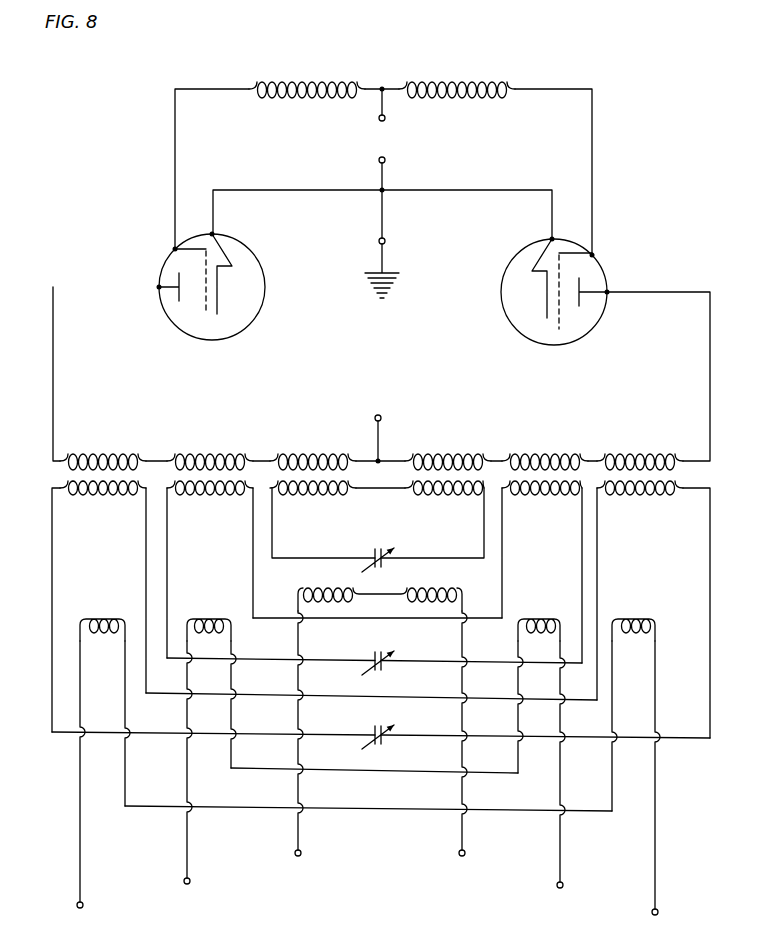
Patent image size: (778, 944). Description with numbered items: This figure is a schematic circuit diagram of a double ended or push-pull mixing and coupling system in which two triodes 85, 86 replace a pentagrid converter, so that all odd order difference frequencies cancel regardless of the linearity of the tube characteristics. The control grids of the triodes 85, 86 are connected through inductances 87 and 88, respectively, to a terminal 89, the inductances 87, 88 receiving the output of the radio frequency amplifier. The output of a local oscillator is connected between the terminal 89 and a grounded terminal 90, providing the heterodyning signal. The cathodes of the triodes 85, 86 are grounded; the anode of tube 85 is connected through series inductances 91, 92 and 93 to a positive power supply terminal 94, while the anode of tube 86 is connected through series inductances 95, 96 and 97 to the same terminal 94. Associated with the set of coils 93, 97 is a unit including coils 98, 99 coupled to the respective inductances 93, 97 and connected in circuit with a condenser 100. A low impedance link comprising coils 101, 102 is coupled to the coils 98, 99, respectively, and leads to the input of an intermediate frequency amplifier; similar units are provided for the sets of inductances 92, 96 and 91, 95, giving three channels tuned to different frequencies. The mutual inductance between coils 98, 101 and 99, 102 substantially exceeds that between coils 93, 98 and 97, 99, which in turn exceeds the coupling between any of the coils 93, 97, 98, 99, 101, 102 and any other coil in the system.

The triode 85 is at (501, 286).
The triode 86 is at (265, 285).
The inductance 87 is at (460, 80).
The inductance 88 is at (323, 80).
The terminal 89 is at (379, 119).
The grounded terminal 90 is at (385, 157).
The inductance 91 is at (647, 459).
The inductance 92 is at (557, 459).
The inductance 93 is at (463, 457).
The positive power supply terminal 94 is at (382, 417).
The inductance 95 is at (115, 453).
The inductance 96 is at (223, 455).
The inductance 97 is at (322, 457).
The coil 98 is at (442, 494).
The coil 99 is at (98, 494).
The condenser 100 is at (375, 548).
The coil 101 is at (434, 587).
The coil 102 is at (103, 615).